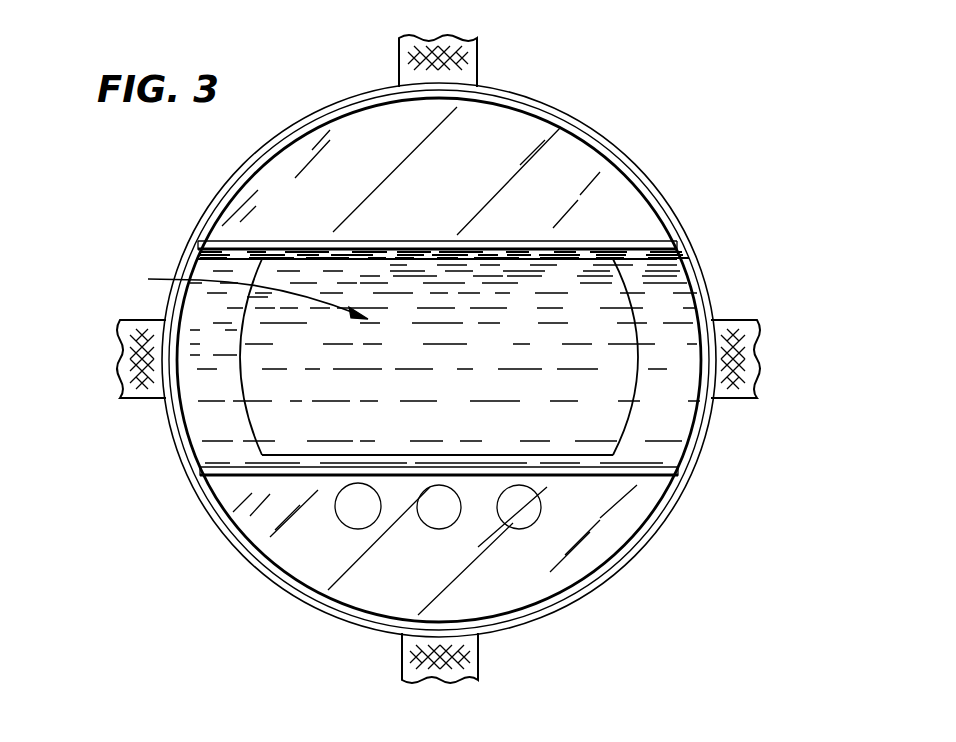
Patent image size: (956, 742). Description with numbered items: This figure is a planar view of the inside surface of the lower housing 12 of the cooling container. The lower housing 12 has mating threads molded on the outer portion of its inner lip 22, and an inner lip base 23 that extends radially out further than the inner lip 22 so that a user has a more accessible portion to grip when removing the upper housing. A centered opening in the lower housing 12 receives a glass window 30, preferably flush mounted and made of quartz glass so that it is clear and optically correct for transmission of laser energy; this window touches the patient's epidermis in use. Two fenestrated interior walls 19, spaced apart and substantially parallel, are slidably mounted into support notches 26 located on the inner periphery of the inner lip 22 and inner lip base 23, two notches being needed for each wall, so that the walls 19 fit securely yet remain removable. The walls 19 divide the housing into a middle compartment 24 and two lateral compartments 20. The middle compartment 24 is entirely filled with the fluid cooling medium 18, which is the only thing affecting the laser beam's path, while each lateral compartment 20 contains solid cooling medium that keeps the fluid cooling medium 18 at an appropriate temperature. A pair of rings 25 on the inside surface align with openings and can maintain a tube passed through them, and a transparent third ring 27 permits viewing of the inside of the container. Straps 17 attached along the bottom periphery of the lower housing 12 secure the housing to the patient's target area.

The lower housing 12 is at (171, 139).
The straps 17 is at (478, 53).
The fluid cooling medium 18 is at (304, 357).
The interior walls 19 is at (630, 235).
The lateral compartments 20 is at (375, 126).
The inner lip 22 is at (617, 147).
The inner lip base 23 is at (562, 104).
The middle compartment 24 is at (246, 292).
The rings 25 is at (356, 514).
The support notches 26 is at (198, 242).
The third ring 27 is at (436, 512).
The glass window 30 is at (285, 421).